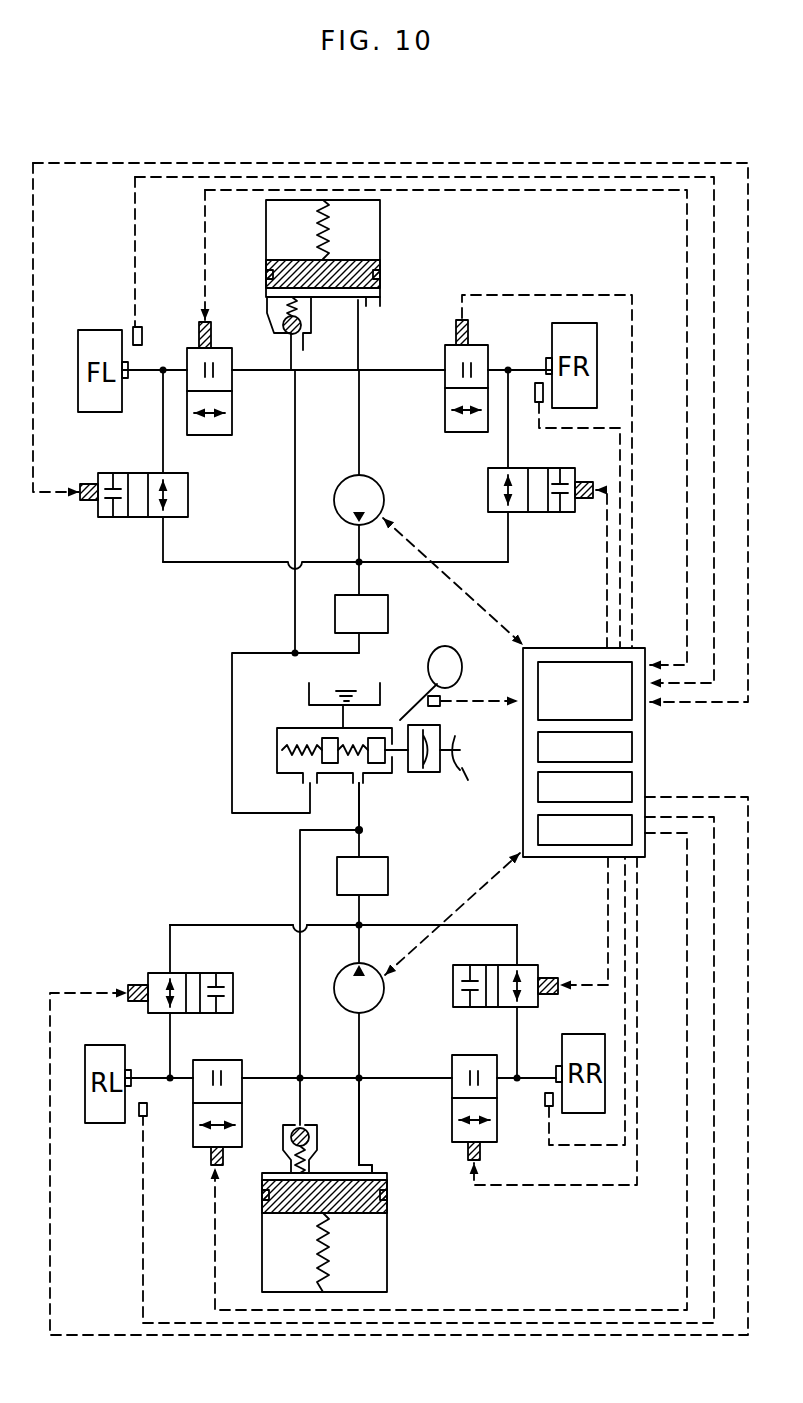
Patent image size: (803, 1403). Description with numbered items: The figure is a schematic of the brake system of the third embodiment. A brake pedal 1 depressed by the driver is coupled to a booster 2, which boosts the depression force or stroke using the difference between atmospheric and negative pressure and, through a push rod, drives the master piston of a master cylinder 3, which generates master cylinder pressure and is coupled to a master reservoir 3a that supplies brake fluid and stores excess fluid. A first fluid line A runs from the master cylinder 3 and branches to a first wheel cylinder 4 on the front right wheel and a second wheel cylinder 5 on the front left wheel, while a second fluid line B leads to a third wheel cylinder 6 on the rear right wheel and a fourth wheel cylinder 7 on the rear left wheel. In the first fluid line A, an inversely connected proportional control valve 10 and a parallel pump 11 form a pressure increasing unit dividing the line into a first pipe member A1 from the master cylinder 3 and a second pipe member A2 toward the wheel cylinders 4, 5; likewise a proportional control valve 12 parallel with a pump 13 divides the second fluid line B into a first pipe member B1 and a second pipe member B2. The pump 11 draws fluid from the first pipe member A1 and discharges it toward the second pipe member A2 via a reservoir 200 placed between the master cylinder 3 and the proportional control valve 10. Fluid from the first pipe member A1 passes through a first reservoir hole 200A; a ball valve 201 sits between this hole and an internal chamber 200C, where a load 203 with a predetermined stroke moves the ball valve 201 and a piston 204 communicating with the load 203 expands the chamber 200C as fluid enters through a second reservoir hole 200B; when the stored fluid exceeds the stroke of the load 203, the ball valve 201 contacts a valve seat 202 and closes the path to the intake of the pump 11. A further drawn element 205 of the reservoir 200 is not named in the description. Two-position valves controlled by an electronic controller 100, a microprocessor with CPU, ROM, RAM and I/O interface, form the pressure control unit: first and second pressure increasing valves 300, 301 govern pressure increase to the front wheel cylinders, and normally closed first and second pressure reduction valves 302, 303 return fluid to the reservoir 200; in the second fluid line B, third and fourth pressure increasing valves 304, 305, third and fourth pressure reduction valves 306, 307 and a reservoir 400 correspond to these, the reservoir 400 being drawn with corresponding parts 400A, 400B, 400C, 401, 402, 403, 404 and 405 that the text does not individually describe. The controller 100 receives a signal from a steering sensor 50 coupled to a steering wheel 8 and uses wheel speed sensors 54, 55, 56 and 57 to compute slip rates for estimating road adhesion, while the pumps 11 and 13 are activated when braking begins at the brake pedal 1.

The brake pedal 1 is at (453, 756).
The booster 2 is at (424, 773).
The master cylinder 3 is at (380, 774).
The master reservoir 3a is at (309, 695).
The first wheel cylinder 4 is at (547, 358).
The second wheel cylinder 5 is at (125, 379).
The third wheel cylinder 6 is at (555, 1068).
The fourth wheel cylinder 7 is at (131, 1072).
The steering wheel 8 is at (446, 647).
The proportional control valve 10 is at (388, 612).
The pump 11 is at (386, 496).
The proportional control valve 12 is at (388, 886).
The pump 13 is at (335, 974).
The steering sensor 50 is at (441, 697).
The wheel speed sensor 54 is at (538, 403).
The wheel speed sensor 55 is at (143, 326).
The wheel speed sensor 56 is at (543, 1103).
The wheel speed sensor 57 is at (150, 1108).
The electronic controller 100 is at (646, 745).
The reservoir 200 is at (393, 261).
The first reservoir hole 200A is at (273, 333).
The second reservoir hole 200B is at (358, 318).
The internal chamber 200C is at (381, 300).
The ball valve 201 is at (290, 312).
The valve seat 202 is at (283, 324).
The load 203 is at (273, 284).
The piston 204 is at (288, 268).
The spring 205 is at (324, 240).
The first pressure increasing valve 300 is at (488, 488).
The second pressure increasing valve 301 is at (188, 495).
The first pressure reduction valve 302 is at (445, 404).
The second pressure reduction valve 303 is at (232, 394).
The third pressure increasing valve 304 is at (477, 965).
The fourth pressure increasing valve 305 is at (221, 973).
The third pressure reduction valve 306 is at (475, 1054).
The fourth pressure reduction valve 307 is at (221, 1059).
The reservoir 400 is at (394, 1253).
The accumulator port 400A is at (330, 1129).
The accumulator port 400B is at (368, 1162).
The accumulator port 400C is at (380, 1172).
The ball valve 401 is at (296, 1128).
The spring 402 is at (295, 1153).
The seal 403 is at (266, 1200).
The piston 404 is at (372, 1204).
The spring 405 is at (328, 1253).
The first fluid line A is at (229, 771).
The first pipe member A1 is at (231, 693).
The second pipe member A2 is at (221, 565).
The second fluid line B is at (368, 832).
The first pipe member B1 is at (358, 808).
The second pipe member B2 is at (168, 936).